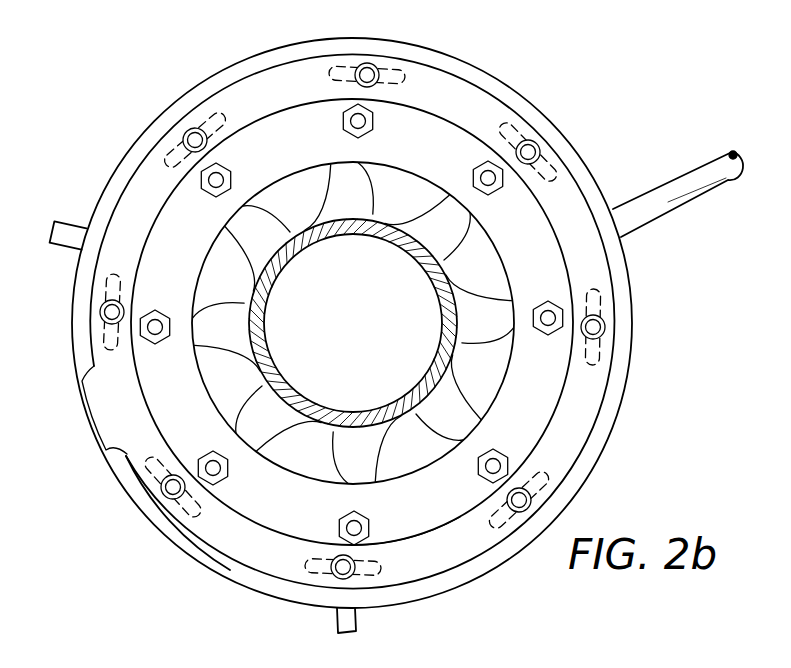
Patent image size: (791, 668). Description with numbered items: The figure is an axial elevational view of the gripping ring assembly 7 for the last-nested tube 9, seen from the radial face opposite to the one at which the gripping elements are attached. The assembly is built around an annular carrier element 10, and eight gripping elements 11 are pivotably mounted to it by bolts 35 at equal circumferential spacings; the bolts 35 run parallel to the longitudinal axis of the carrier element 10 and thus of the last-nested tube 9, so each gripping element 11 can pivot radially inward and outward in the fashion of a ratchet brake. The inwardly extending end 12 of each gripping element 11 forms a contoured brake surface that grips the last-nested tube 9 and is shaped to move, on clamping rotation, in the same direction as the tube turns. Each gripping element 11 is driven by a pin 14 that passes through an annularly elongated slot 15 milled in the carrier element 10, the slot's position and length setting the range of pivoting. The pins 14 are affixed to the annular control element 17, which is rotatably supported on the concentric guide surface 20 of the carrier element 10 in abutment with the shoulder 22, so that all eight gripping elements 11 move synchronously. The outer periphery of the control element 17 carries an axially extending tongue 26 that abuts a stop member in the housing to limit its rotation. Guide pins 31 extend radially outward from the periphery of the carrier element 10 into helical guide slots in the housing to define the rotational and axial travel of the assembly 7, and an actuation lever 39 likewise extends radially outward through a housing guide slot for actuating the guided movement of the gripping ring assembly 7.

The gripping ring assembly 7 is at (353, 36).
The last-nested tube 9 is at (265, 344).
The annular carrier element 10 is at (449, 145).
The gripping element 11 is at (466, 234).
The inwardly extending end 12 is at (410, 222).
The pin 14 is at (379, 72).
The annularly elongated slot 15 is at (384, 84).
The annular control element 17 is at (203, 535).
The concentric guide surface 20 is at (222, 567).
The shoulder 22 is at (431, 537).
The axially extending tongue 26 is at (95, 428).
The guide pin 31 is at (72, 221).
The bolt 35 is at (490, 180).
The actuation lever 39 is at (660, 192).